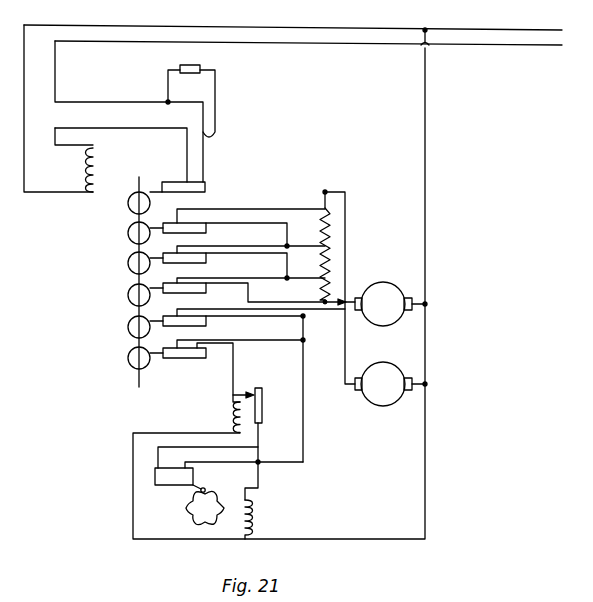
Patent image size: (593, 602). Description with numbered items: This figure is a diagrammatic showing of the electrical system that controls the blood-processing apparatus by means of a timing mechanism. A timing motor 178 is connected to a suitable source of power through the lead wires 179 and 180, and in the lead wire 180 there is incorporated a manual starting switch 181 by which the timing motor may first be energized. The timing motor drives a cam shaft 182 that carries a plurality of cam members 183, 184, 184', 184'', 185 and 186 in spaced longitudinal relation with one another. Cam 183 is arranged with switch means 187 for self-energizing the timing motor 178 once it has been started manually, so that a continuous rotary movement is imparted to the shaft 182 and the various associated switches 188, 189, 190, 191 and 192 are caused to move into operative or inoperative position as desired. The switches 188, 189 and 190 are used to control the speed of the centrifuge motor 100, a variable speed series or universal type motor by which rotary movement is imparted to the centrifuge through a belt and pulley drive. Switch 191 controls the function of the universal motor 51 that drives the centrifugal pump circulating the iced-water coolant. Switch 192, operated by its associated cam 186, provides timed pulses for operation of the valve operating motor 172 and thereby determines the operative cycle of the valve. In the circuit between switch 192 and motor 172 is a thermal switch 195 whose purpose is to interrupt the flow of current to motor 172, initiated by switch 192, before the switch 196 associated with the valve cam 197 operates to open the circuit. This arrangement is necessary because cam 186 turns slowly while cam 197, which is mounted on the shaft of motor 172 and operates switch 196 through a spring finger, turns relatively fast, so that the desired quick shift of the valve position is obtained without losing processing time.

The lead wire 179 is at (488, 28).
The lead wire 180 is at (495, 45).
The manual starting switch 181 is at (196, 65).
The switch means 187 is at (205, 189).
The timing motor 178 is at (97, 164).
The driven cam shaft 182 is at (139, 177).
The cam member 183 is at (128, 203).
The cam member 184 is at (114, 234).
The cam member 184' is at (114, 263).
The cam member 184'' is at (114, 295).
The cam member 185 is at (128, 326).
The cam member 186 is at (128, 356).
The switch 188 is at (210, 231).
The switch 189 is at (210, 262).
The switch 190 is at (207, 287).
The switch 191 is at (207, 322).
The switch 192 is at (186, 358).
The thermal switch 195 is at (262, 415).
The switch 196 is at (155, 485).
The valve cam 197 is at (230, 487).
The valve operating motor 172 is at (252, 520).
The centrifuge motor 100 is at (397, 270).
The universal motor 51 is at (388, 372).